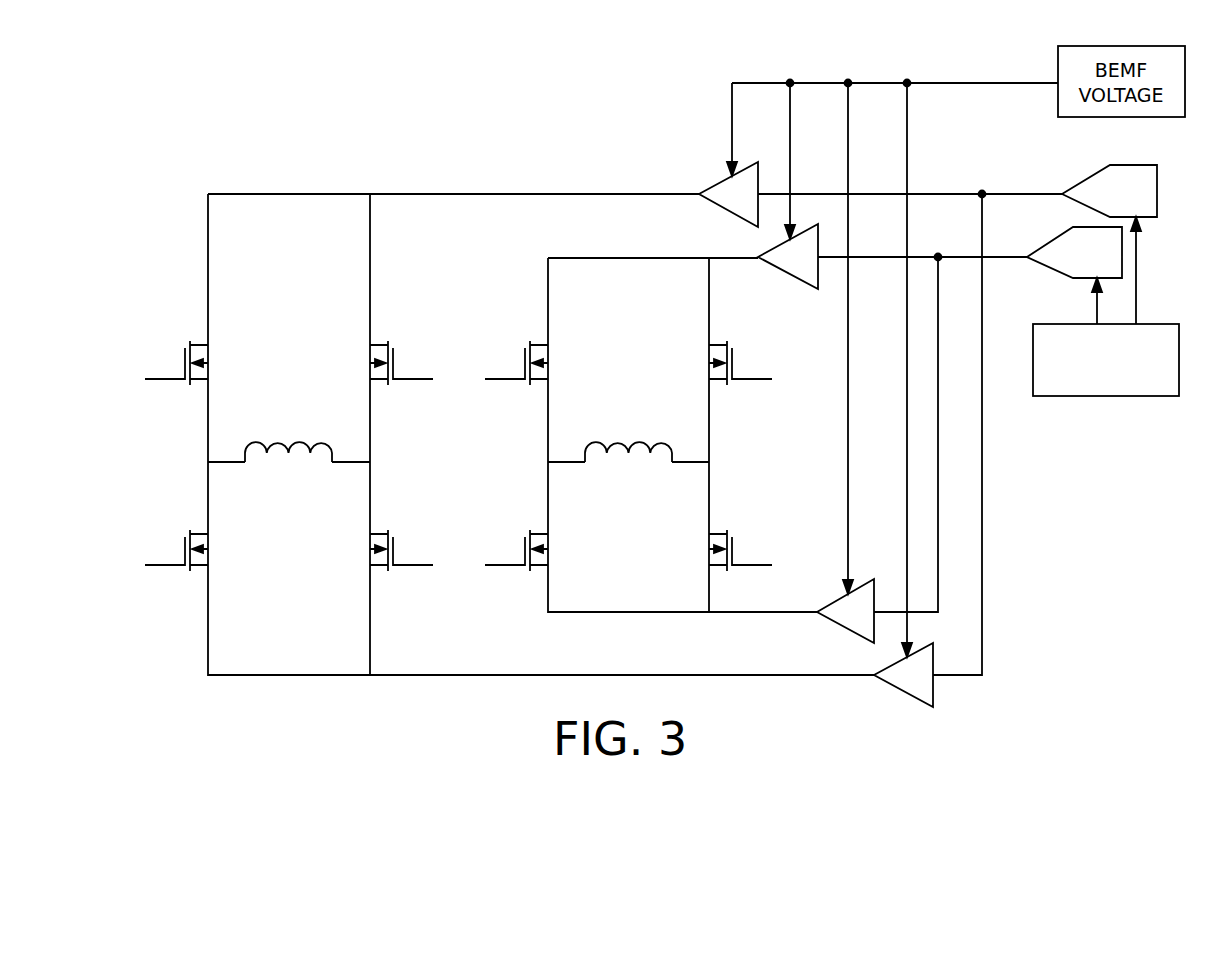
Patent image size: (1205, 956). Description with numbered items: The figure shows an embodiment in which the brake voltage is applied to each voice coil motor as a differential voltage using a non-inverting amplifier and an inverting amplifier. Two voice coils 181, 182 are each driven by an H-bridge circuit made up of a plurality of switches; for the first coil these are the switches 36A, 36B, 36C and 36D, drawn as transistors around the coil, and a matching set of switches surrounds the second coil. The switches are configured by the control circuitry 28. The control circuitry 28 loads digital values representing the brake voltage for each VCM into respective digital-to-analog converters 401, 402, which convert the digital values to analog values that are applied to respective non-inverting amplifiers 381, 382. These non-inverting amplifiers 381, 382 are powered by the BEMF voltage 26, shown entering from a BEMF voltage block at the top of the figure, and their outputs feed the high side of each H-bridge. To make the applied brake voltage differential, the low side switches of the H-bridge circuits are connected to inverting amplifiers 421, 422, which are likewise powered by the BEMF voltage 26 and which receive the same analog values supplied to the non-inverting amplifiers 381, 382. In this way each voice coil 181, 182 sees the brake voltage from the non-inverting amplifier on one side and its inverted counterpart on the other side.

The BEMF voltage 26 is at (940, 83).
The control circuitry 28 is at (1105, 398).
The switch 36A is at (176, 335).
The switch 36B is at (406, 337).
The switch 36C is at (178, 518).
The switch 36D is at (407, 521).
The voice coil 181 is at (290, 423).
The voice coil 182 is at (631, 423).
The non-inverting amplifier 381 is at (712, 184).
The non-inverting amplifier 382 is at (778, 270).
The digital-to-analog converter 401 is at (1086, 174).
The digital-to-analog converter 402 is at (1047, 272).
The inverting amplifier 421 is at (899, 694).
The inverting amplifier 422 is at (838, 597).